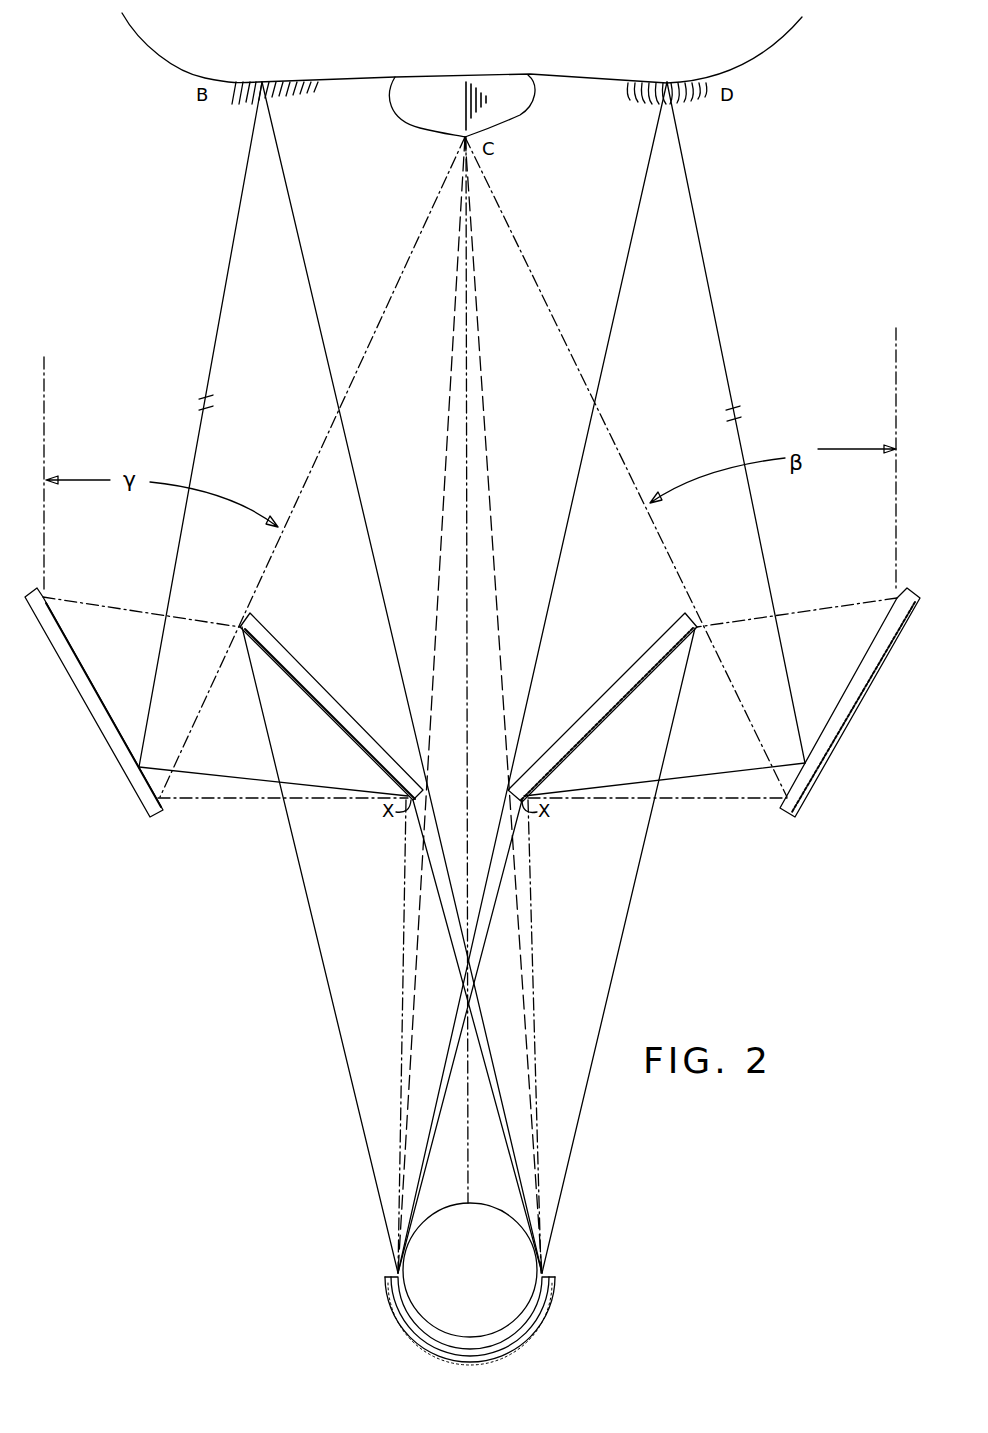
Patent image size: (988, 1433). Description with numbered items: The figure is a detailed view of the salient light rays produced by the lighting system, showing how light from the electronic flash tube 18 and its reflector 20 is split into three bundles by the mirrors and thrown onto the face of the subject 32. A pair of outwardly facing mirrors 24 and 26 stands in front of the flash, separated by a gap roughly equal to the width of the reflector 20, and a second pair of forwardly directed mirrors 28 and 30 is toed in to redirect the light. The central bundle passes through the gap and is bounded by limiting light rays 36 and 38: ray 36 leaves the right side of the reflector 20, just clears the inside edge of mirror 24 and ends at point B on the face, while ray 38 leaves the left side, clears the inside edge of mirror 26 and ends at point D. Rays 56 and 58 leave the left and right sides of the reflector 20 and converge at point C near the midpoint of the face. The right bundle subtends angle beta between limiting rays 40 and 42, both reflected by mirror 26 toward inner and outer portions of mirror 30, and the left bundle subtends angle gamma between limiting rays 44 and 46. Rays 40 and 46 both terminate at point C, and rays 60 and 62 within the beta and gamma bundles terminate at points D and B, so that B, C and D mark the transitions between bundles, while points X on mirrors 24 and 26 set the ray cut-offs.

The electronic flash tube 18 is at (488, 1220).
The reflector 20 is at (548, 1283).
The outwardly facing mirror 24 is at (348, 688).
The outwardly facing mirror 26 is at (614, 684).
The forwardly directed mirror 28 is at (82, 698).
The forwardly directed mirror 30 is at (858, 707).
The subject 32 is at (480, 54).
The light ray 36 is at (349, 457).
The light ray 38 is at (586, 432).
The light ray 40 is at (620, 427).
The light ray 42 is at (896, 352).
The light ray 44 is at (47, 385).
The light ray 46 is at (320, 460).
The light ray 56 is at (440, 503).
The light ray 58 is at (490, 506).
The light ray 60 is at (707, 280).
The light ray 62 is at (221, 304).